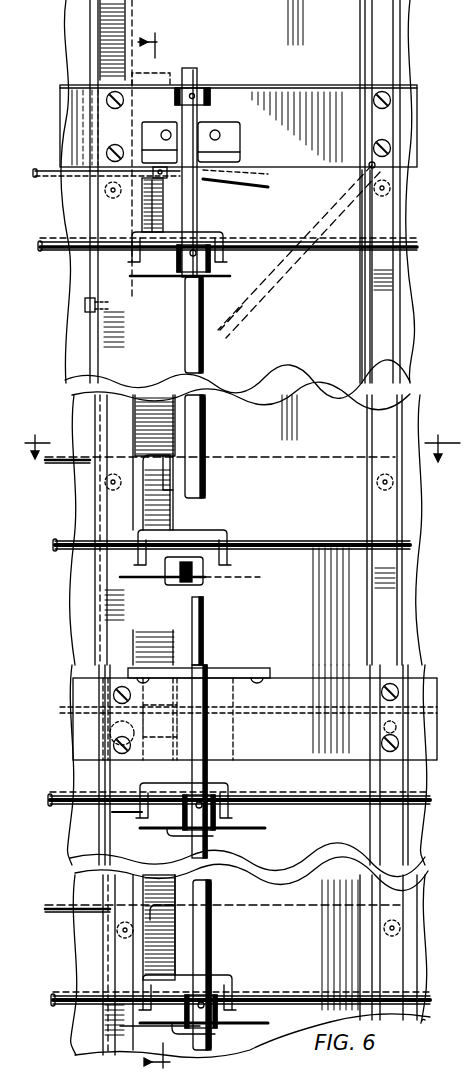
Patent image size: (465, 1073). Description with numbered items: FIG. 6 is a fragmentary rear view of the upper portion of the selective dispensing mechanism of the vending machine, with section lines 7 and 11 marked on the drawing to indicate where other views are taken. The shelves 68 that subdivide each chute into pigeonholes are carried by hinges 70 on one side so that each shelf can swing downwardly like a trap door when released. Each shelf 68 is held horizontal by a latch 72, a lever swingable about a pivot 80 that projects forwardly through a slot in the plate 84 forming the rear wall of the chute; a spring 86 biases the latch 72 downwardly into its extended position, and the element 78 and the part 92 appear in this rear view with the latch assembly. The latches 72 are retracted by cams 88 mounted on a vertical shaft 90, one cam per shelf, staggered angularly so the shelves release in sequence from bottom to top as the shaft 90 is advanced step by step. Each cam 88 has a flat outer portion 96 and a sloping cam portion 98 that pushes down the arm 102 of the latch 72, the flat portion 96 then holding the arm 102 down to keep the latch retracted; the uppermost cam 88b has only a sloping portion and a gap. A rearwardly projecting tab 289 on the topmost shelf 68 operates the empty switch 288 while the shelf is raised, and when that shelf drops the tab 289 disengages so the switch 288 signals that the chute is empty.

The section line 7- 7 is at (166, 545).
The section line 11- 11 is at (244, 444).
The shelf 68 is at (38, 178).
The hinge 70 is at (405, 206).
The latch 72 is at (145, 212).
The bracket 78 is at (170, 945).
The pivot 80 is at (417, 240).
The plate 84 is at (280, 365).
The spring 86 is at (142, 277).
The cam 88 is at (265, 829).
The uppermost cam 88b is at (230, 330).
The vertical shaft 90 is at (208, 352).
The guide block 92 is at (149, 412).
The flat outer portion 96 is at (228, 265).
The sloping cam portion 98 is at (140, 823).
The arm 102 is at (148, 222).
The empty switch 288 is at (228, 122).
The tab 289 is at (290, 269).